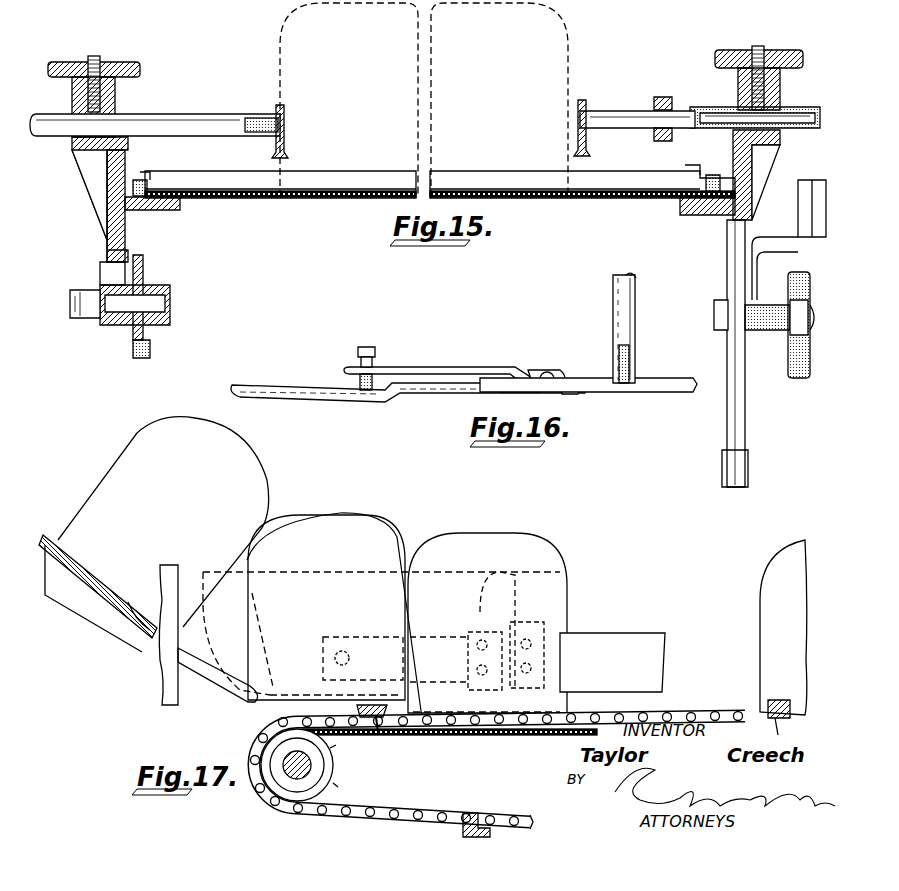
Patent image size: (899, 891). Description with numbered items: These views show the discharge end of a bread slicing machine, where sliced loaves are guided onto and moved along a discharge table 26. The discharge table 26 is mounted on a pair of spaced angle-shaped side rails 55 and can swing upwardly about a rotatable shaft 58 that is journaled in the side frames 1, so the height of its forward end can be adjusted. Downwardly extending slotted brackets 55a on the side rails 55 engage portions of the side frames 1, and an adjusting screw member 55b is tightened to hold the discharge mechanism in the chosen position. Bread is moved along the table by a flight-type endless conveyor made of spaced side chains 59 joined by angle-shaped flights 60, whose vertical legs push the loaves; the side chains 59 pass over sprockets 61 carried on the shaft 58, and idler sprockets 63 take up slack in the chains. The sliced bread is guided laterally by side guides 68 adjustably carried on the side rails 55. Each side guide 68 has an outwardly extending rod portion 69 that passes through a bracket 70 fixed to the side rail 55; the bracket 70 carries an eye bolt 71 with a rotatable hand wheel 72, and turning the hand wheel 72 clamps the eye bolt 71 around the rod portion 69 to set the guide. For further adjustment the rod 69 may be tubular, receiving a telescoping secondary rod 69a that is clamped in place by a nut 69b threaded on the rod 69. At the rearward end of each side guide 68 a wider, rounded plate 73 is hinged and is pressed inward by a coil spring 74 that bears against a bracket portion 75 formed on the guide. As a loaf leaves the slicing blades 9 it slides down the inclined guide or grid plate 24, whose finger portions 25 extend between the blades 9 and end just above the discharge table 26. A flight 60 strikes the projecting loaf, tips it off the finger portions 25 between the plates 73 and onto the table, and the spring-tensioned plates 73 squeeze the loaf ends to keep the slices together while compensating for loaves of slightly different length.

In FIG. 15, the side frames 1 is at (820, 232).
In FIG. 17, the slicing blades 9 is at (162, 710).
In FIG. 17, the guide or grid plate 24 is at (96, 612).
In FIG. 17, the finger portions 25 is at (220, 688).
In FIG. 15, the discharge table 26 is at (302, 200).
In FIG. 15, the side rails 55 is at (172, 210).
In FIG. 15, the slotted brackets 55a is at (730, 410).
In FIG. 15, the adjusting screw member 55b is at (804, 378).
In FIG. 17, the rotatable shaft 58 is at (292, 772).
In FIG. 15, the side chains 59 is at (140, 172).
In FIG. 17, the side chains 59 is at (407, 812).
In FIG. 15, the flights 60 is at (362, 180).
In FIG. 17, the flights 60 is at (390, 732).
In FIG. 17, the sprockets 61 is at (330, 775).
In FIG. 15, the idler sprockets 63 is at (145, 274).
In FIG. 15, the side guides 68 is at (276, 105).
In FIG. 16, the side guides 68 is at (650, 392).
In FIG. 17, the side guides 68 is at (638, 645).
In FIG. 15, the rod portions 69 is at (205, 120).
In FIG. 16, the rod portions 69 is at (613, 305).
In FIG. 15, the secondary rod 69a is at (616, 118).
In FIG. 15, the nut 69b is at (660, 97).
In FIG. 15, the brackets 70 is at (115, 104).
In FIG. 15, the eye bolts 71 is at (94, 56).
In FIG. 15, the hand wheels 72 is at (122, 62).
In FIG. 16, the plate 73 is at (388, 402).
In FIG. 17, the plate 73 is at (243, 646).
In FIG. 16, the coil spring 74 is at (372, 375).
In FIG. 16, the bracket portion 75 is at (490, 367).
In FIG. 17, the bracket portion 75 is at (445, 637).